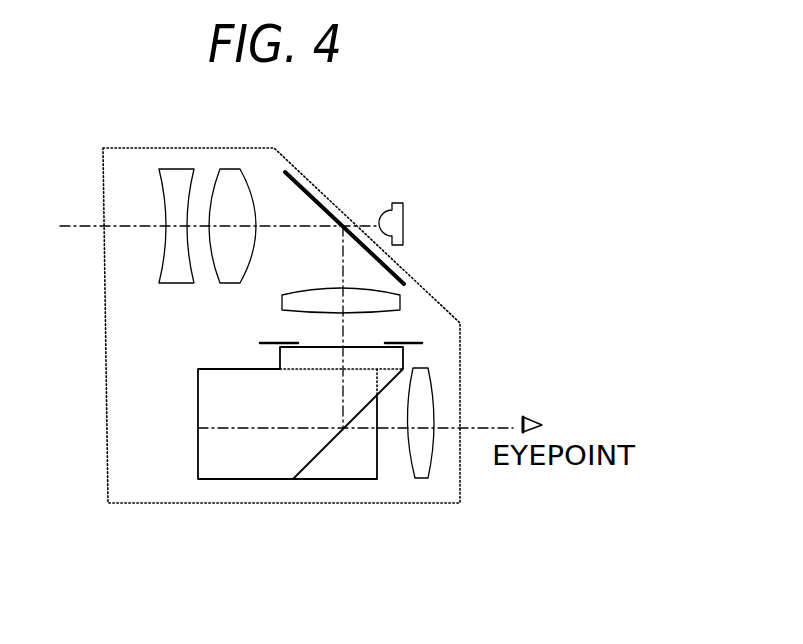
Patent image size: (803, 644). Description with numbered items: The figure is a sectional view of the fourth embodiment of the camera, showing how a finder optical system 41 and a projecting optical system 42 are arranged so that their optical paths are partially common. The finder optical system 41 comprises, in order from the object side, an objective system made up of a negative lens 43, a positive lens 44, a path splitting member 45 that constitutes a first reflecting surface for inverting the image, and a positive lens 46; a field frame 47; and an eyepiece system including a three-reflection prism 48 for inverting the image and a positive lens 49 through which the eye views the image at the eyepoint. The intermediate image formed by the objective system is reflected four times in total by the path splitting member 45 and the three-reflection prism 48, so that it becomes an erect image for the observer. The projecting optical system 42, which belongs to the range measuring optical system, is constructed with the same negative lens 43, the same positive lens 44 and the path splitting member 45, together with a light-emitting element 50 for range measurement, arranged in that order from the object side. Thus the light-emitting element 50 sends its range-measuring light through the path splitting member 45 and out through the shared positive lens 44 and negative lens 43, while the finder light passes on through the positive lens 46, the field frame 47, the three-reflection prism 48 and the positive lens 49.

The finder optical system 41 is at (103, 184).
The projecting optical system 42 is at (400, 135).
The negative lens 43 is at (175, 283).
The positive lens 44 is at (232, 283).
The path splitting member 45 is at (318, 200).
The positive lens 46 is at (307, 295).
The field frame 47 is at (420, 343).
The three-reflection prism 48 is at (345, 470).
The positive lens 49 is at (422, 469).
The light-emitting element 50 is at (403, 218).